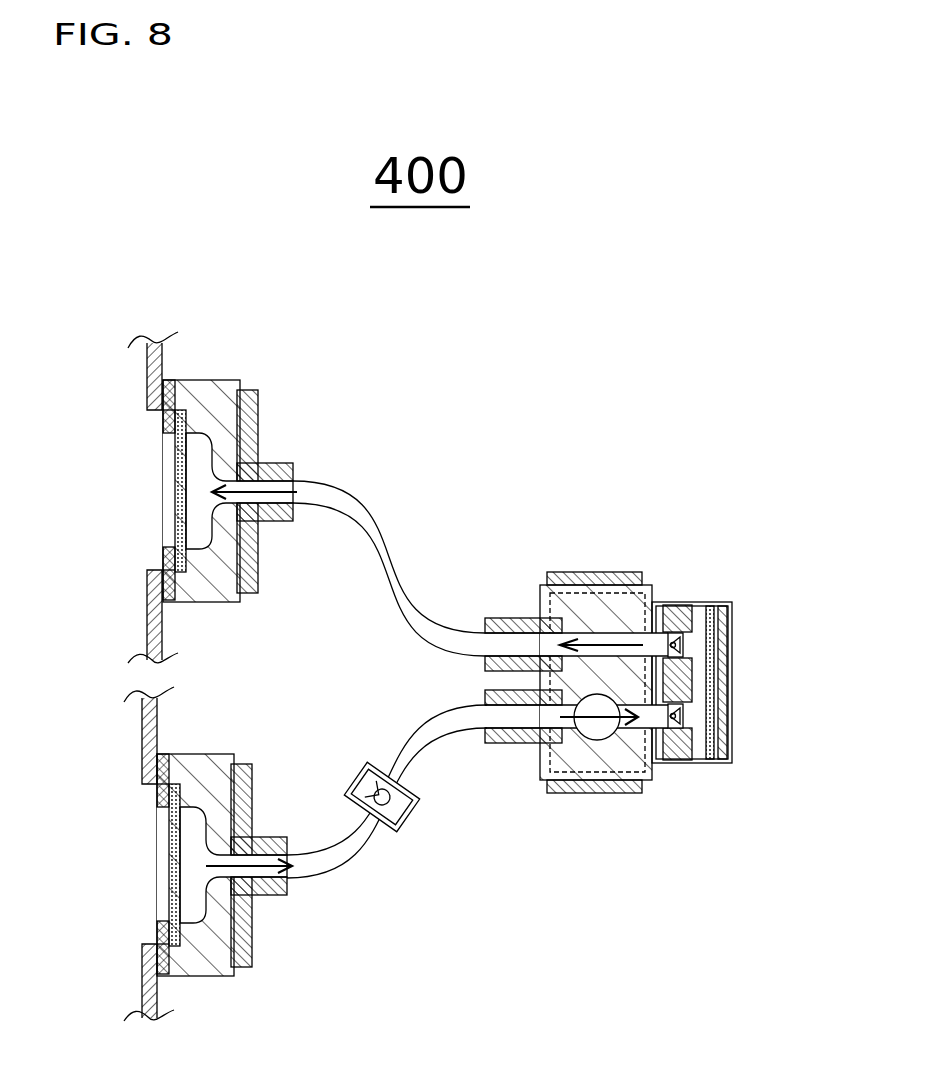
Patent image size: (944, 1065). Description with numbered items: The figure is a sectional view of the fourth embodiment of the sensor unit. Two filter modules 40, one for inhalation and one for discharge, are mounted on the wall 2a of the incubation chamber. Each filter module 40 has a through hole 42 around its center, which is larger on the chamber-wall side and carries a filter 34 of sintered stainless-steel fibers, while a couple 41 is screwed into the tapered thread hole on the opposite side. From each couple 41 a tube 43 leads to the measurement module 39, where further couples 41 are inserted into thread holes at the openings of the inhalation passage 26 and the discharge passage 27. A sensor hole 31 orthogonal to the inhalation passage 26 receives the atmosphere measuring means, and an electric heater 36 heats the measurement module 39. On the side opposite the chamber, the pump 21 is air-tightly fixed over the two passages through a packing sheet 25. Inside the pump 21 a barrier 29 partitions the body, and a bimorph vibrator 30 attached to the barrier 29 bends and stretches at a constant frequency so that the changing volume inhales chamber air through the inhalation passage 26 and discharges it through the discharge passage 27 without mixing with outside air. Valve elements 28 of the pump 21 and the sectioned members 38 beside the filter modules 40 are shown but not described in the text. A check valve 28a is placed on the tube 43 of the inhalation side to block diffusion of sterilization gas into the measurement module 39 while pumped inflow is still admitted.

The wall 2a is at (147, 378).
The pump 21 is at (732, 733).
The packing sheet 25 is at (658, 603).
The inhalation passage 26 is at (583, 792).
The discharge passage 27 is at (598, 612).
The check valve 28 is at (688, 603).
The check valve 28a is at (405, 823).
The barrier 29 is at (715, 633).
The bimorph vibrator 30 is at (717, 682).
The sensor hole 31 is at (627, 793).
The filter 34 is at (176, 490).
The electric heater 36 is at (253, 553).
The seal 38 is at (163, 418).
The measurement module 39 is at (540, 583).
The filter module 40 is at (212, 392).
The couple 41 is at (268, 466).
The through hole 42 is at (198, 497).
The tube 43 is at (372, 512).